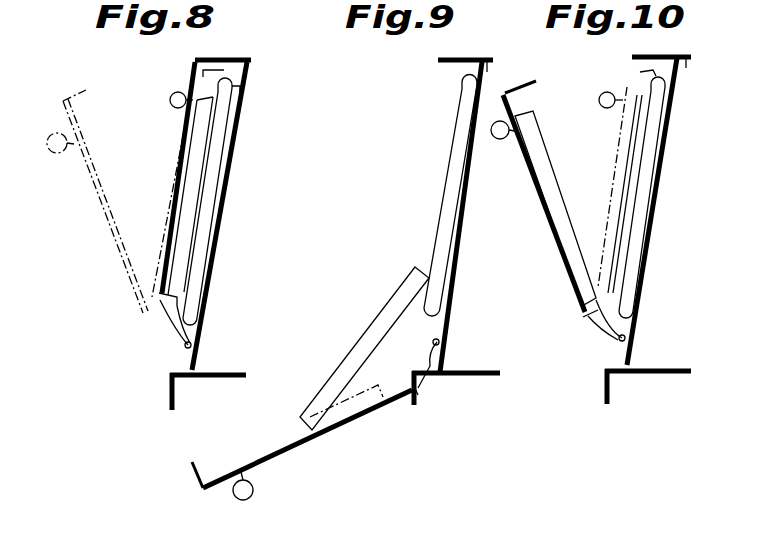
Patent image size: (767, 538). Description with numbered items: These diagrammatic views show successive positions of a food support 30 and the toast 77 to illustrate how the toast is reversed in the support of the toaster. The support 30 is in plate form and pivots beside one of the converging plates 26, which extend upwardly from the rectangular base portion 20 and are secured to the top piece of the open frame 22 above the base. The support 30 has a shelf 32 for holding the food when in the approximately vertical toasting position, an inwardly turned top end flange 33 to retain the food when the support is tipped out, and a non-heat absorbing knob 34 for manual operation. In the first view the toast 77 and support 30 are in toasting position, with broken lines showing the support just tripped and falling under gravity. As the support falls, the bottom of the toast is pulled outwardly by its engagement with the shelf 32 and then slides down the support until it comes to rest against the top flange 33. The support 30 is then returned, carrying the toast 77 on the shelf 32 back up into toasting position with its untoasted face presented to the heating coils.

In FIG. 8, the rectangular base portion 20 is at (178, 394).
In FIG. 9, the rectangular base portion 20 is at (420, 393).
In FIG. 10, the rectangular base portion 20 is at (614, 394).
In FIG. 8, the open frame 22 is at (230, 59).
In FIG. 9, the open frame 22 is at (461, 59).
In FIG. 10, the open frame 22 is at (673, 56).
In FIG. 8, the converging plates 26 is at (215, 157).
In FIG. 9, the converging plates 26 is at (448, 168).
In FIG. 10, the converging plates 26 is at (647, 178).
In FIG. 8, the food support 30 is at (188, 135).
In FIG. 9, the food support 30 is at (338, 425).
In FIG. 10, the food support 30 is at (562, 260).
In FIG. 8, the shelf 32 is at (180, 330).
In FIG. 9, the shelf 32 is at (412, 386).
In FIG. 10, the shelf 32 is at (610, 339).
In FIG. 8, the top end flange 33 is at (201, 72).
In FIG. 9, the top end flange 33 is at (197, 484).
In FIG. 10, the top end flange 33 is at (542, 72).
In FIG. 8, the knob 34 is at (170, 100).
In FIG. 9, the knob 34 is at (255, 486).
In FIG. 10, the knob 34 is at (500, 140).
In FIG. 8, the toast 77 is at (180, 284).
In FIG. 9, the toast 77 is at (372, 340).
In FIG. 10, the toast 77 is at (553, 208).